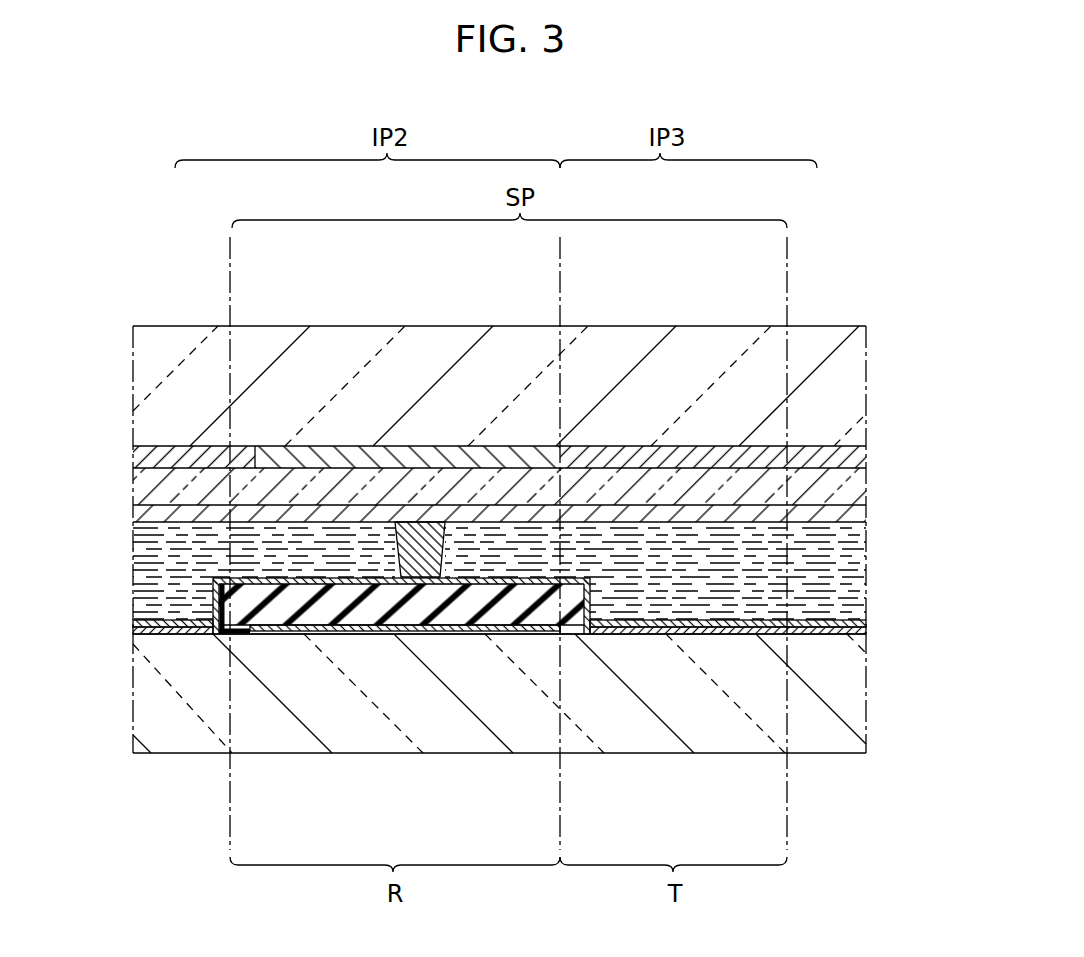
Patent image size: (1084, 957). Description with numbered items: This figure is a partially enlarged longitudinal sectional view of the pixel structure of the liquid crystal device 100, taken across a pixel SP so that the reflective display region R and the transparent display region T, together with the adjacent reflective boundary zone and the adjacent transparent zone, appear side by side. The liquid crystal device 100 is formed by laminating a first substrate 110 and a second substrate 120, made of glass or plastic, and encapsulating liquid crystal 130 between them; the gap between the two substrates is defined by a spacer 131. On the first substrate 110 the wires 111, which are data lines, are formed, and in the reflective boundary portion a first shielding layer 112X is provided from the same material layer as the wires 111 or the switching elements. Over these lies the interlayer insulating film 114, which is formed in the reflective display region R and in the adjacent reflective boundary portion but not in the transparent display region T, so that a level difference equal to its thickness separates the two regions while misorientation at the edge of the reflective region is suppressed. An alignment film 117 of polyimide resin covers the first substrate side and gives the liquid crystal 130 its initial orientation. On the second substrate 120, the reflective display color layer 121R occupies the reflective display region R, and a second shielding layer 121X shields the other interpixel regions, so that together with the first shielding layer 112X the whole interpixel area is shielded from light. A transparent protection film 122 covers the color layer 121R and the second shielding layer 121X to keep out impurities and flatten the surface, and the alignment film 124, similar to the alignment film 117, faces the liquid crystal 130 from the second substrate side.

The liquid crystal device 100 is at (518, 114).
The first substrate 110 is at (148, 711).
The wire 111 is at (180, 634).
The first shielding layer 112X is at (445, 631).
The interlayer insulating film 114 is at (325, 612).
The alignment film 117 is at (830, 623).
The second substrate 120 is at (275, 340).
The second shielding layer 121X is at (207, 452).
The reflective display color layer 121R is at (353, 457).
The transparent protection film 122 is at (860, 485).
The alignment film 124 is at (860, 512).
The liquid crystal 130 is at (857, 585).
The spacer 131 is at (445, 540).